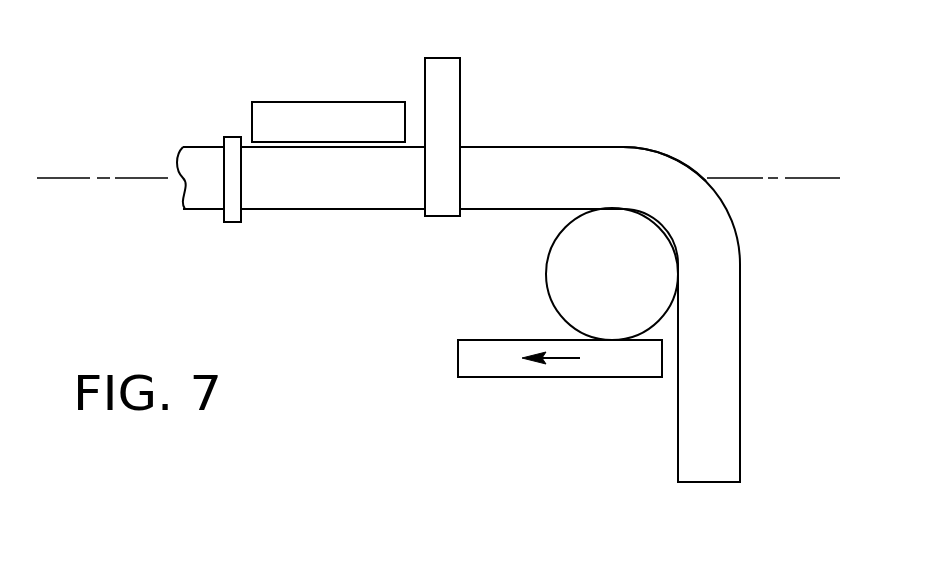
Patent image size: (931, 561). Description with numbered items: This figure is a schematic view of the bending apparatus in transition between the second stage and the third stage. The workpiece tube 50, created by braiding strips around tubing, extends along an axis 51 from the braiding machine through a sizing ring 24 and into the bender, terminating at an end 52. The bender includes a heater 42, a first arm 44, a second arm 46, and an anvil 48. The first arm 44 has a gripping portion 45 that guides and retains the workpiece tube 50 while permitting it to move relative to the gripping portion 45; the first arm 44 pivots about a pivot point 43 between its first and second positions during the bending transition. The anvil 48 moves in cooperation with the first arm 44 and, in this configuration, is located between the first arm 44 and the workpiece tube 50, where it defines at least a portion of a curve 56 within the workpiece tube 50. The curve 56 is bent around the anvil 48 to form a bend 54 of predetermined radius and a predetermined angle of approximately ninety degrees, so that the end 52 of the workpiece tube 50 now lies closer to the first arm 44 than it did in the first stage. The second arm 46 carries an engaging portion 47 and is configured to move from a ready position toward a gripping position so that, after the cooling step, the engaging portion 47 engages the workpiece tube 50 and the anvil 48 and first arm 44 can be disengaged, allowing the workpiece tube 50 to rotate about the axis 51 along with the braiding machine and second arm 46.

The sizing ring 24 is at (234, 137).
The heater 42 is at (288, 102).
The pivot point 43 is at (465, 340).
The first arm 44 is at (497, 362).
The gripping portion 45 is at (635, 365).
The second arm 46 is at (460, 82).
The engaging portion 47 is at (441, 208).
The anvil 48 is at (558, 267).
The workpiece tube 50 is at (338, 243).
The axis 51 is at (67, 178).
The end 52 is at (740, 468).
The bend 54 is at (707, 228).
The curve 56 is at (690, 172).